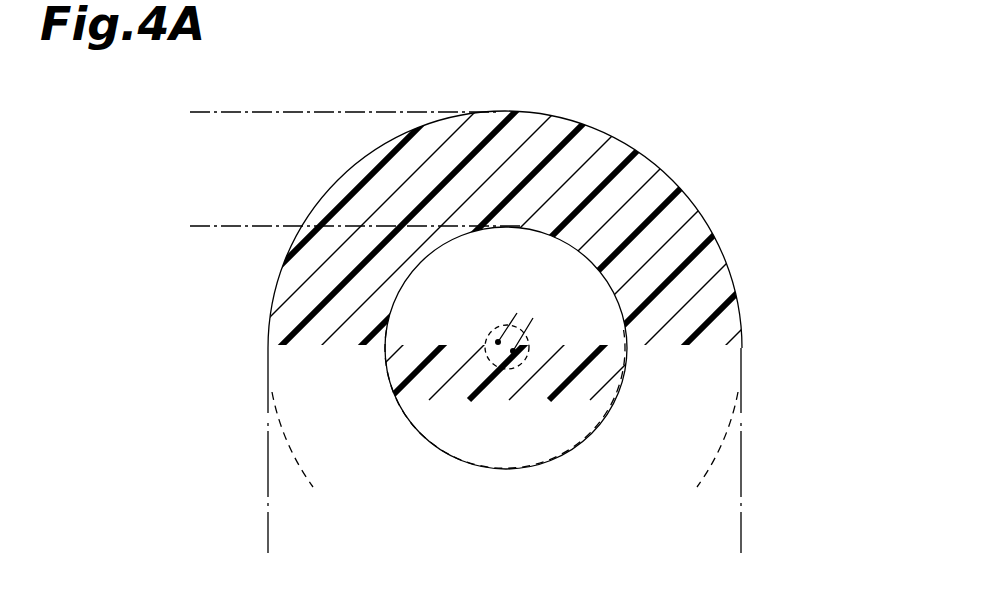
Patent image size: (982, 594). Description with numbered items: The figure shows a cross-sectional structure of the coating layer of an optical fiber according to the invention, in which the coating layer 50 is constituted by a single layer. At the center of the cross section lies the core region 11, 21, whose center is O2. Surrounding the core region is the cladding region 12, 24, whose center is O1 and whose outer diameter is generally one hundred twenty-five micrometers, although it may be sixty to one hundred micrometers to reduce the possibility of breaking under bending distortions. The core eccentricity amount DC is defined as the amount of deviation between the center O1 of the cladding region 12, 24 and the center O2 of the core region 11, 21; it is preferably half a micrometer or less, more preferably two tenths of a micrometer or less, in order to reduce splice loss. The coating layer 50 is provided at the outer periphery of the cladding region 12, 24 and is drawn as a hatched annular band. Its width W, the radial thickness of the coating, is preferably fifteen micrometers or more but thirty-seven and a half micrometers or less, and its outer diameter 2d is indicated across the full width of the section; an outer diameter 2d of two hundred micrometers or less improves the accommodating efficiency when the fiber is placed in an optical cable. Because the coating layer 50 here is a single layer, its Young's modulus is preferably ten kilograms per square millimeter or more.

The coating layer 50 is at (590, 112).
The core region 11 is at (505, 411).
The core region 21 is at (497, 360).
The cladding region 12 is at (564, 433).
The cladding region 24 is at (612, 380).
The center of the cladding region O1 is at (498, 344).
The center of the core region O2 is at (513, 351).
The core eccentricity amount DC is at (502, 298).
The width of the coating layer W is at (222, 112).
The outer diameter of the coating layer 2d is at (741, 521).